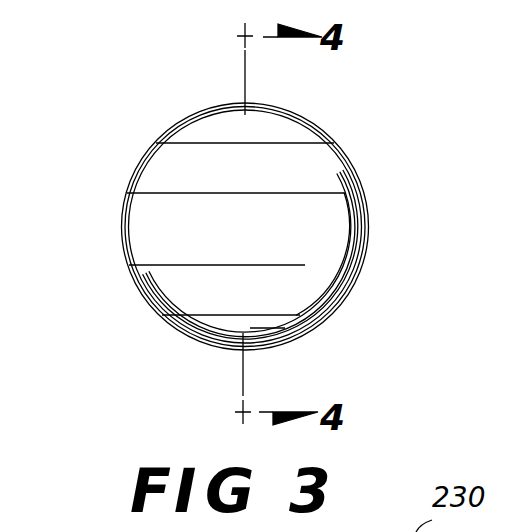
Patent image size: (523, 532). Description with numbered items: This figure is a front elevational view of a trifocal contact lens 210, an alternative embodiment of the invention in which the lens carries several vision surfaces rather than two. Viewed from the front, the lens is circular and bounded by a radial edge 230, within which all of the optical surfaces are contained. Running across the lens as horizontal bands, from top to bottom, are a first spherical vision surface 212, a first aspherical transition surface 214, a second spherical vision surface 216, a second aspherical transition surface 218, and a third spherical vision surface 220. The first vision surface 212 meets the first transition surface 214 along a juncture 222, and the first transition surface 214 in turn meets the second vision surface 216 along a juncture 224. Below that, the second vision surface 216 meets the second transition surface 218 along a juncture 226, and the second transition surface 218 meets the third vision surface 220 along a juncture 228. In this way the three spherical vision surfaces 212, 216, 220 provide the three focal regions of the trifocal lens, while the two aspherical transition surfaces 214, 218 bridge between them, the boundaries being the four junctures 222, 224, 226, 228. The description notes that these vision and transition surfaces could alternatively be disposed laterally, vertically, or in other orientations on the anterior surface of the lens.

The trifocal contact lens 210 is at (128, 117).
The first spherical vision surface 212 is at (237, 125).
The first aspherical transition surface 214 is at (266, 189).
The second spherical vision surface 216 is at (266, 241).
The second aspherical transition surface 218 is at (266, 309).
The third spherical vision surface 220 is at (231, 330).
The juncture 222 is at (292, 143).
The juncture 224 is at (322, 193).
The juncture 226 is at (305, 265).
The juncture 228 is at (268, 328).
The radial edge 230 is at (137, 289).